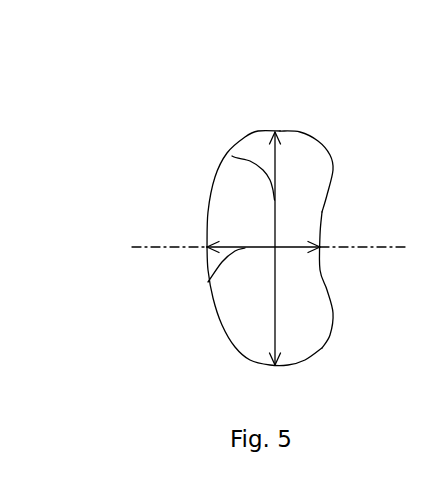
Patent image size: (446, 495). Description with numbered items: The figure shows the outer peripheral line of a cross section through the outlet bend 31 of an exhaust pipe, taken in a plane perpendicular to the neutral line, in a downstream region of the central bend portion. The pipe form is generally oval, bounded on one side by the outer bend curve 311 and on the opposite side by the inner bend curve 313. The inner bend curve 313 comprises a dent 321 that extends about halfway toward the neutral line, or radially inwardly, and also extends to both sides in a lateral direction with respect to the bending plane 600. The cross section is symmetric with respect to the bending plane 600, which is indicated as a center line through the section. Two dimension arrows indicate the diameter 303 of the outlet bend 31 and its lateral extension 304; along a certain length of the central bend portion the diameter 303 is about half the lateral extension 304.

The outlet bend 31 is at (250, 131).
The outer bend curve 311 is at (213, 185).
The inner bend curve 313 is at (333, 162).
The dent 321 is at (321, 229).
The lateral extension 304 is at (232, 156).
The diameter 303 is at (208, 282).
The bending plane 600 is at (168, 245).